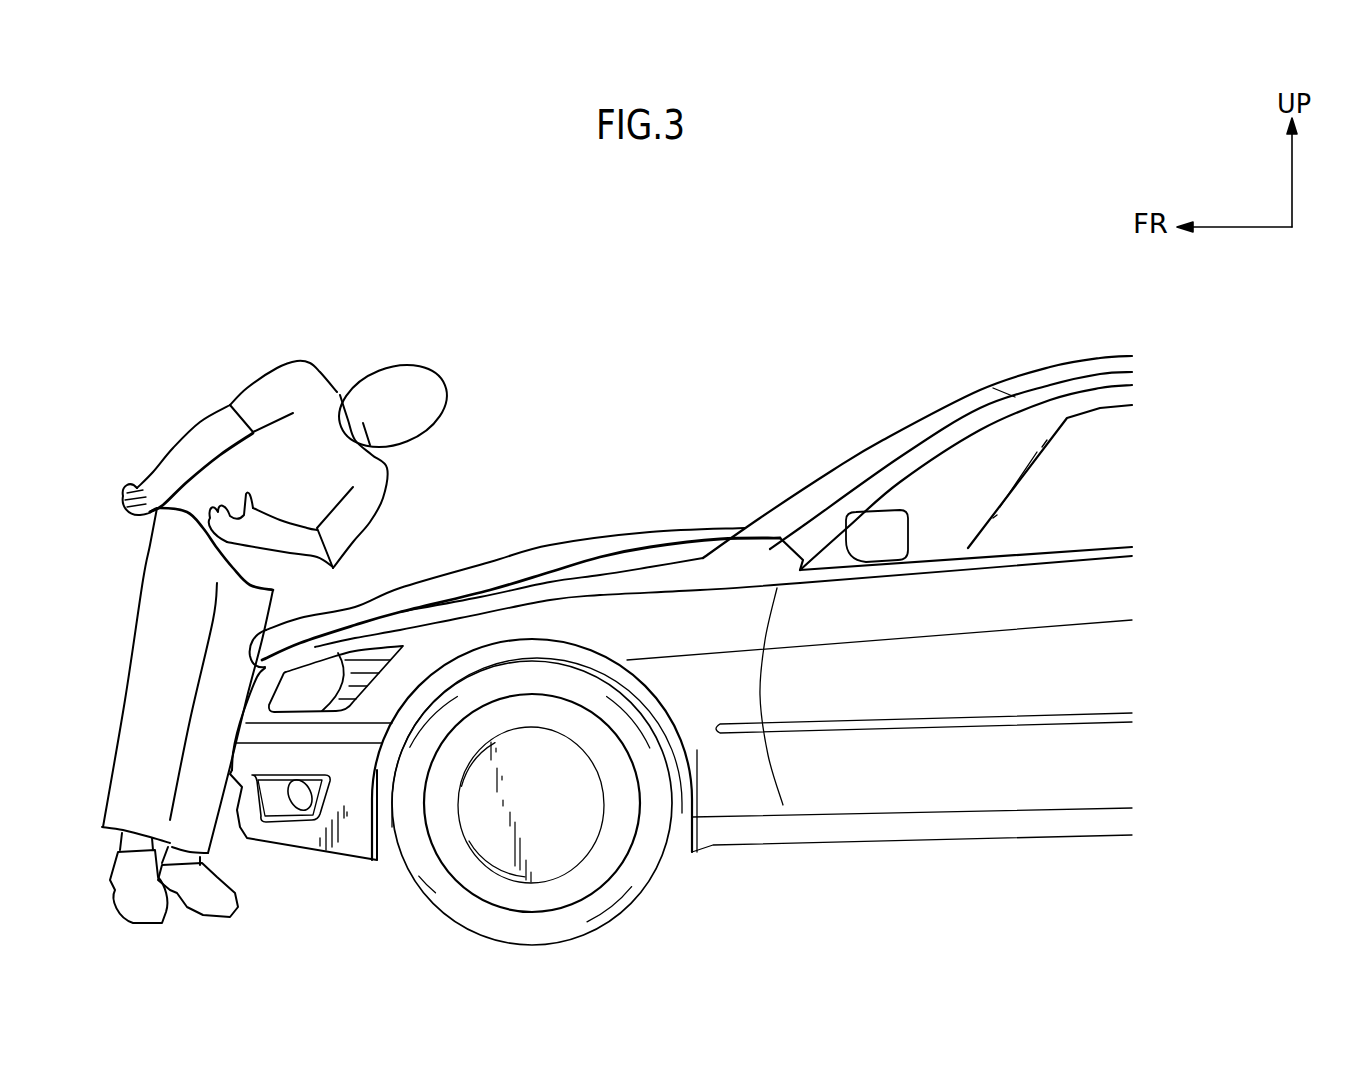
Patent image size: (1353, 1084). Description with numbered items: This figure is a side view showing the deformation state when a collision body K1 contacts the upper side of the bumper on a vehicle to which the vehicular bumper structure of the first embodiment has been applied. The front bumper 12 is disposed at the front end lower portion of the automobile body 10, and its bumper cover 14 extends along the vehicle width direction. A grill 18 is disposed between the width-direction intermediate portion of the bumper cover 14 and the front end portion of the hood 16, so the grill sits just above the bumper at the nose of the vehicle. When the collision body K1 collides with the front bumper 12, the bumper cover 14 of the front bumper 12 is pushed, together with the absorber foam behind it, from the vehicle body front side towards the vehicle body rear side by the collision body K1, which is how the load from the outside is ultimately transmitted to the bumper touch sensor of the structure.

The automobile body 10 is at (978, 385).
The front bumper 12 is at (230, 733).
The bumper cover 14 is at (240, 827).
The hood 16 is at (577, 532).
The grill 18 is at (265, 629).
The collision body K1 is at (126, 676).